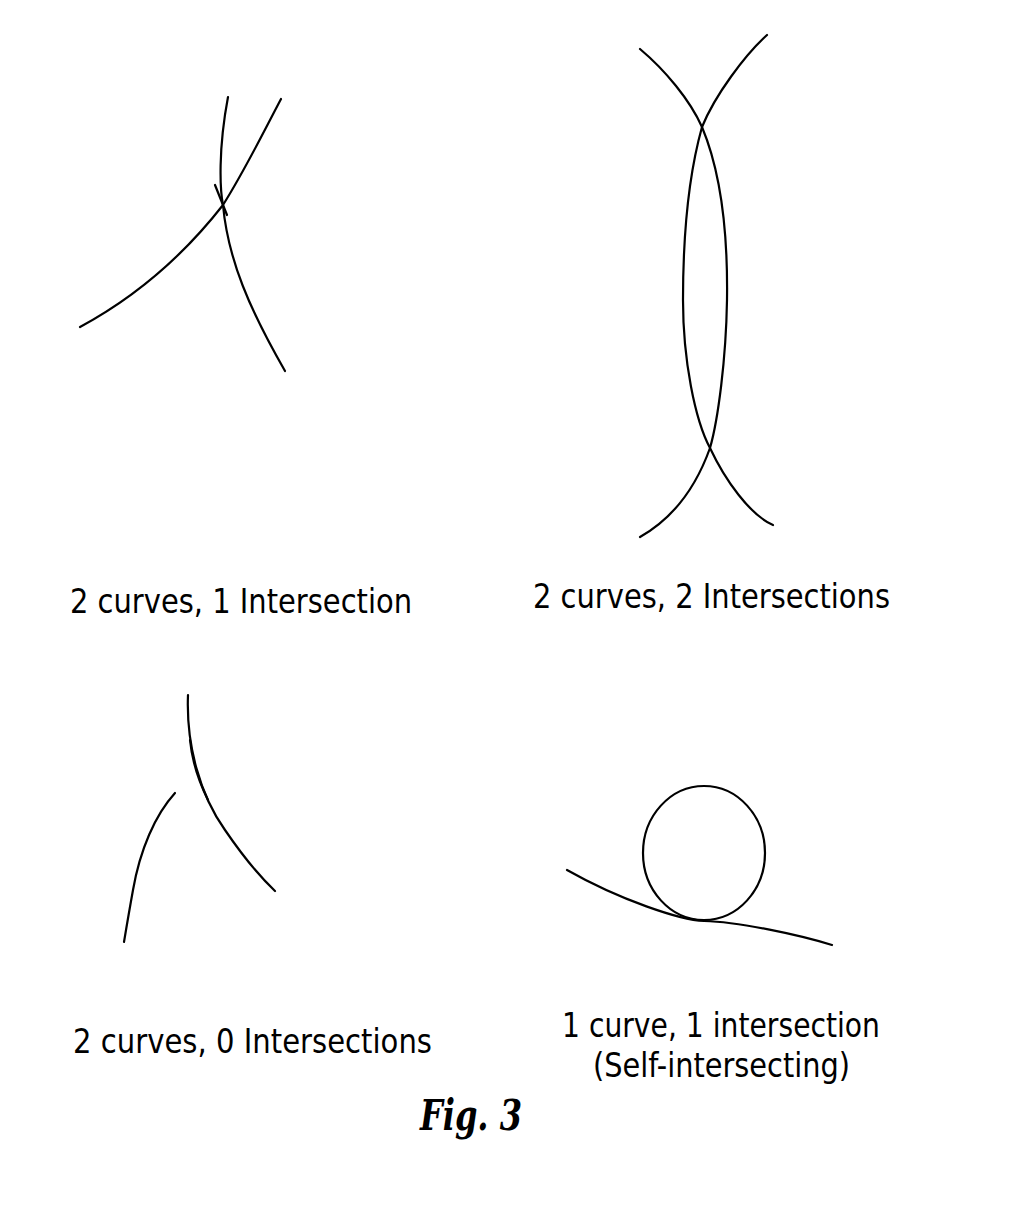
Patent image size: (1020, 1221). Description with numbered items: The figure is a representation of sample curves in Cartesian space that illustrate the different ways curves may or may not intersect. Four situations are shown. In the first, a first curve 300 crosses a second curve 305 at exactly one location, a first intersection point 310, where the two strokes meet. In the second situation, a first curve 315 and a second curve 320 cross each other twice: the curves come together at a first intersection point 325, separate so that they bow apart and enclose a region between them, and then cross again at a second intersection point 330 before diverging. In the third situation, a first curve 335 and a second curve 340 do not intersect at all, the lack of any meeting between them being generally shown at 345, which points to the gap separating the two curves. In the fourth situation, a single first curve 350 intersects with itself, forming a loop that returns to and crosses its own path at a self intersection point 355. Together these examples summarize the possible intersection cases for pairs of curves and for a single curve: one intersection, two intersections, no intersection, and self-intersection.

The first curve 300 is at (296, 93).
The second curve 305 is at (288, 390).
The first intersection point 310 is at (210, 201).
The first curve 315 is at (628, 40).
The second curve 320 is at (779, 28).
The first intersection point 325 is at (690, 127).
The second intersection point 330 is at (697, 447).
The first curve 335 is at (117, 953).
The second curve 340 is at (286, 902).
The region of no intersection 345 is at (173, 762).
The first curve 350 is at (702, 770).
The self intersection point 355 is at (700, 938).